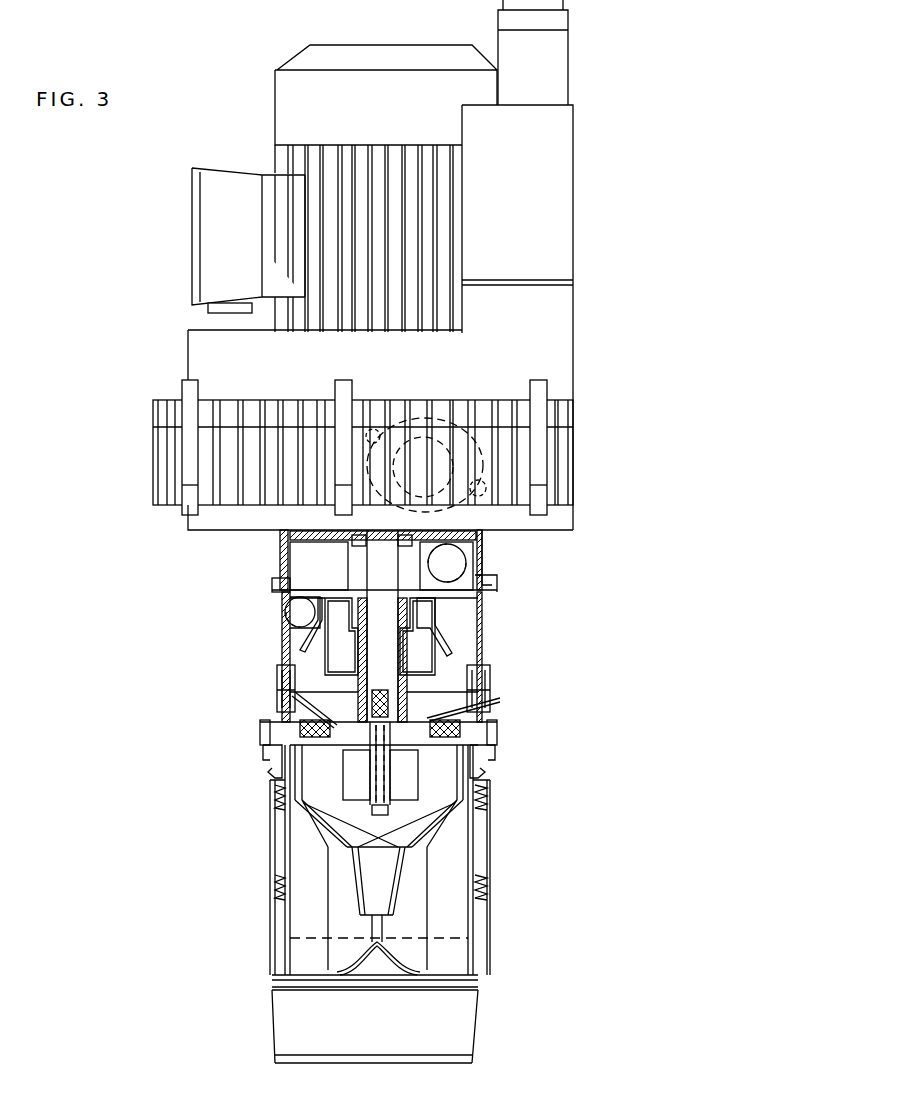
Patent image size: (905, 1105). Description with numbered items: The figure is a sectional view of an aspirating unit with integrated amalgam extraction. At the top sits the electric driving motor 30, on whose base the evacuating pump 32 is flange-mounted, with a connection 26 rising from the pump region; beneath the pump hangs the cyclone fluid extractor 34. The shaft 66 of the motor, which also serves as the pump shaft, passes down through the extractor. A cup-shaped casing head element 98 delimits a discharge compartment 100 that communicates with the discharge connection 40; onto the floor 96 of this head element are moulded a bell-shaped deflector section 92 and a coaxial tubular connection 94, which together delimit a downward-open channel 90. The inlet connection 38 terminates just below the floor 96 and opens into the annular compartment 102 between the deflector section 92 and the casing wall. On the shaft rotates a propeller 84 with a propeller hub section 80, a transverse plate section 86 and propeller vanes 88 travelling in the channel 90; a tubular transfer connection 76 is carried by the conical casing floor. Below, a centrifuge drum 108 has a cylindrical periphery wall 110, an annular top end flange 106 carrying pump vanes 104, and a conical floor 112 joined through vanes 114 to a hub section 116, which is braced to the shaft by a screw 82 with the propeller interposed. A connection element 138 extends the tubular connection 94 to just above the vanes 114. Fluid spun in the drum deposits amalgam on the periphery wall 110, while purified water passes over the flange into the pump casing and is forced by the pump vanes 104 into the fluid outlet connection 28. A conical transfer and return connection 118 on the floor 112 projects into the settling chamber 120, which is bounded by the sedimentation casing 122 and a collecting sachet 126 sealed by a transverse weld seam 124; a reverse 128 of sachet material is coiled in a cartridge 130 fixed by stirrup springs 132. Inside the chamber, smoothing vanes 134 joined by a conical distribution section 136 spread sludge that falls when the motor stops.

The conduit 26 is at (560, 55).
The electric driving motor 30 is at (422, 237).
The evacuating pump 32 is at (507, 462).
The shaft 66 is at (382, 588).
The casing head element 98 is at (286, 553).
The discharge compartment 100 is at (308, 576).
The discharge connection 40 is at (452, 562).
The floor 96 is at (482, 572).
The inlet connection 38 is at (285, 613).
The tubular connection 94 is at (420, 601).
The channel 90 is at (303, 630).
The deflector section 92 is at (414, 621).
The annular compartment 102 is at (287, 645).
The propeller hub section 80 is at (410, 660).
The propeller 84 is at (335, 648).
The cyclone fluid extractor 34 is at (509, 660).
The propeller vanes 88 is at (343, 668).
The transverse plate section 86 is at (340, 678).
The tubular transfer connection 76 is at (485, 687).
The fluid outlet connection 28 is at (298, 723).
The pump vanes 104 is at (458, 722).
The annular top end flange 106 is at (447, 750).
The stirrup springs 132 is at (270, 773).
The cylindrical periphery wall 110 is at (464, 777).
The hub section 116 is at (367, 758).
The floor 112 is at (432, 840).
The connection element 138 is at (312, 812).
The vanes 114 is at (412, 835).
The reverse 128 is at (277, 847).
The transfer and return connection 118 is at (405, 877).
The cartridge 130 is at (270, 877).
The collecting sachet 126 is at (280, 900).
The sedimentation casing 122 is at (472, 913).
The smoothing vanes 134 is at (310, 920).
The settling chamber 120 is at (415, 922).
The conical distribution section 136 is at (373, 945).
The screw 82 is at (393, 917).
The centrifuge drum 108 is at (388, 946).
The transverse weld seam 124 is at (480, 983).